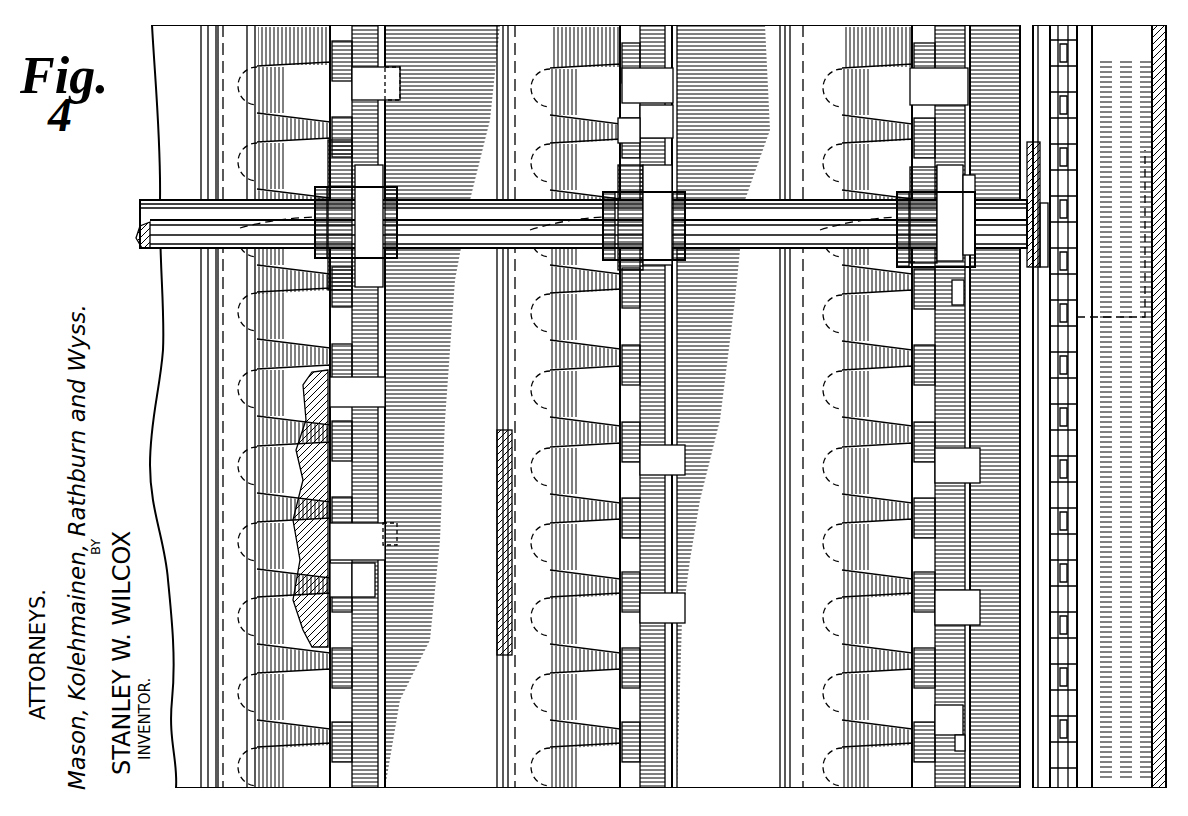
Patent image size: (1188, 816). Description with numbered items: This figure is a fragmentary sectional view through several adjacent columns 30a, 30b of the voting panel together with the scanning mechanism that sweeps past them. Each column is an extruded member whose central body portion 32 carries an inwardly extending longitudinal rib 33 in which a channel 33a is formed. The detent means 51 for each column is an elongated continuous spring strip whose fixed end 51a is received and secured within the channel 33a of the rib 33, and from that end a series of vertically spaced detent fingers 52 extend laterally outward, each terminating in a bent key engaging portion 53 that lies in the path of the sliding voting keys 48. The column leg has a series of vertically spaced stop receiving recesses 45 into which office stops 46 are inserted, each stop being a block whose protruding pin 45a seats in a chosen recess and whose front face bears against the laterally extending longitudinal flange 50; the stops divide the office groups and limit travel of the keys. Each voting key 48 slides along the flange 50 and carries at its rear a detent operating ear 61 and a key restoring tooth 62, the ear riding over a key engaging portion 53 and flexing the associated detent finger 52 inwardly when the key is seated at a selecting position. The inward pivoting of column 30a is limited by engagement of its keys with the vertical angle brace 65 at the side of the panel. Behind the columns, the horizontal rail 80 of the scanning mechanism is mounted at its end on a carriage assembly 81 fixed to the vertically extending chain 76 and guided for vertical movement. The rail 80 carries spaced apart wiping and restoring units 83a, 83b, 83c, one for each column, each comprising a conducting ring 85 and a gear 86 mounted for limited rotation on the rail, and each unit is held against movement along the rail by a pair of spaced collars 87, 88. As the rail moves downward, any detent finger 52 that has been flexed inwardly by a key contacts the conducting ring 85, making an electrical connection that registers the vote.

The column 30a is at (152, 150).
The column 30b is at (480, 52).
The central body portion 32 is at (162, 376).
The longitudinal rib 33 is at (210, 464).
The channel 33a is at (504, 518).
The stop receiving recesses 45 is at (322, 440).
The pin 45a is at (322, 392).
The office stop 46 is at (372, 82).
The voting key 48 is at (383, 585).
The longitudinal flange 50 is at (372, 335).
The detent means 51 is at (220, 110).
The end of detent strip 51a is at (222, 68).
The detent fingers 52 is at (288, 195).
The key engaging portion 53 is at (640, 52).
The detent operating ear 61 is at (342, 593).
The key restoring tooth 62 is at (365, 598).
The vertical angle brace 65 is at (1005, 42).
The chain 76 is at (1078, 72).
The horizontal rail 80 is at (430, 247).
The carriage assembly 81 is at (1027, 145).
The wiping and restoring unit 83a is at (900, 272).
The wiping and restoring unit 83b is at (680, 225).
The wiping and restoring unit 83c is at (400, 222).
The conducting ring 85 is at (345, 165).
The gear 86 is at (375, 173).
The collar 87 is at (898, 268).
The collar 88 is at (975, 192).